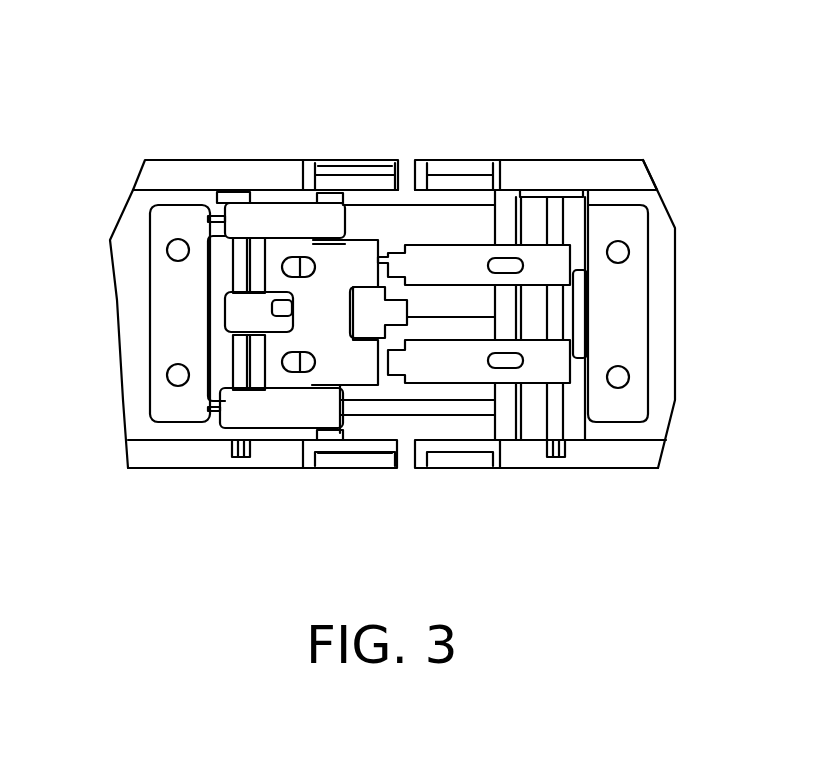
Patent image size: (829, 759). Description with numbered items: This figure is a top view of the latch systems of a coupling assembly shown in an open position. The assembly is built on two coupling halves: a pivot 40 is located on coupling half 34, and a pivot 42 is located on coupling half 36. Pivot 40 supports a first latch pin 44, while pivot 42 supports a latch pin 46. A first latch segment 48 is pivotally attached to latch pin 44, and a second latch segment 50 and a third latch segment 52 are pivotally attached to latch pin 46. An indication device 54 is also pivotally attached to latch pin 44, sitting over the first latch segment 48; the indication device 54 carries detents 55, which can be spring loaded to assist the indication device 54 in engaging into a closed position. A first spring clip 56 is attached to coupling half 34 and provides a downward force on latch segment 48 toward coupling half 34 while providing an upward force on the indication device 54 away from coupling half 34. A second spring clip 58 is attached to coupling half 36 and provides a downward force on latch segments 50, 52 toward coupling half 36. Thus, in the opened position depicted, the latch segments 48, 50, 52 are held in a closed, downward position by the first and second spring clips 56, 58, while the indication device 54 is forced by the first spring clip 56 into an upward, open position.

The coupling half 34 is at (177, 158).
The coupling half 36 is at (630, 158).
The pivot 40 is at (210, 428).
The pivot 42 is at (588, 433).
The first latch pin 44 is at (232, 455).
The latch pin 46 is at (560, 457).
The first latch segment 48 is at (213, 305).
The second latch segment 50 is at (443, 240).
The third latch segment 52 is at (435, 383).
The indication device 54 is at (288, 200).
The detents 55 is at (342, 190).
The first spring clip 56 is at (147, 320).
The second spring clip 58 is at (652, 333).